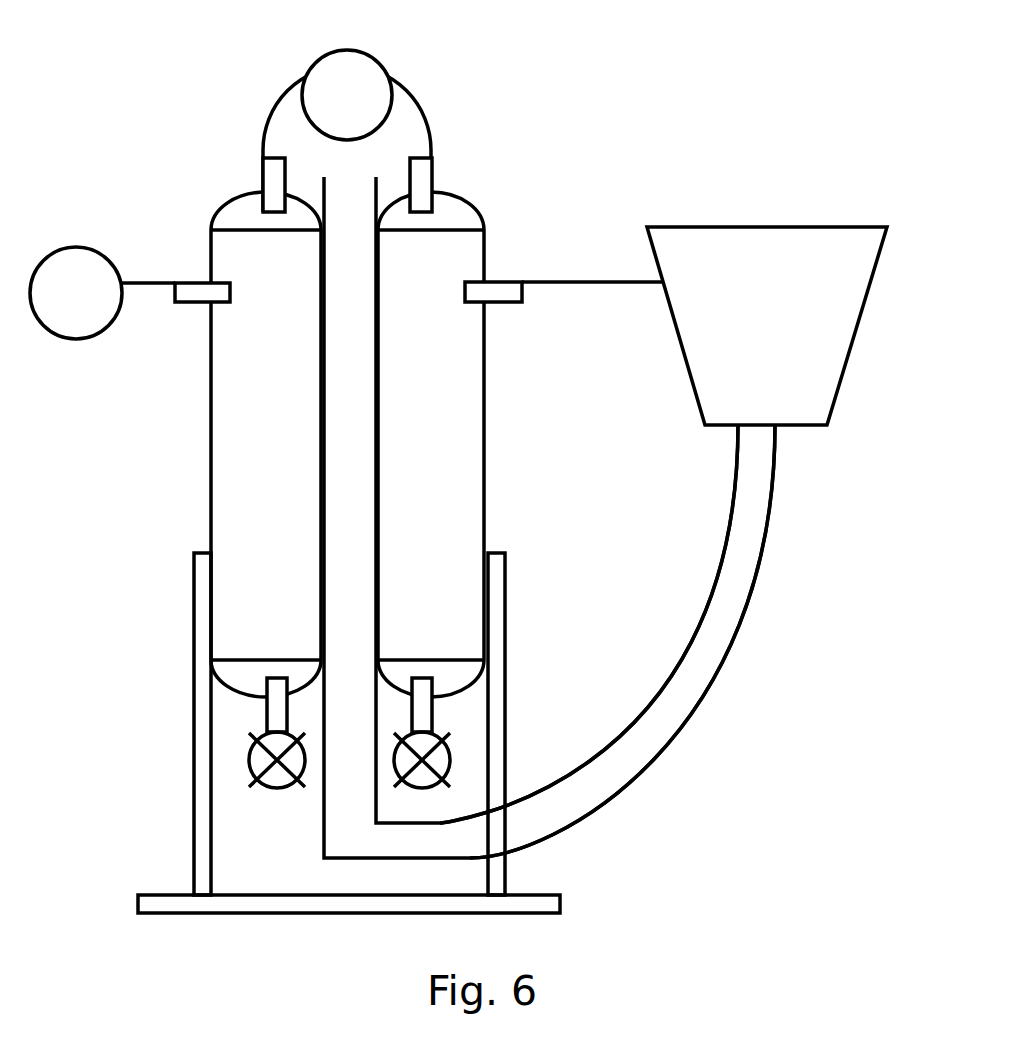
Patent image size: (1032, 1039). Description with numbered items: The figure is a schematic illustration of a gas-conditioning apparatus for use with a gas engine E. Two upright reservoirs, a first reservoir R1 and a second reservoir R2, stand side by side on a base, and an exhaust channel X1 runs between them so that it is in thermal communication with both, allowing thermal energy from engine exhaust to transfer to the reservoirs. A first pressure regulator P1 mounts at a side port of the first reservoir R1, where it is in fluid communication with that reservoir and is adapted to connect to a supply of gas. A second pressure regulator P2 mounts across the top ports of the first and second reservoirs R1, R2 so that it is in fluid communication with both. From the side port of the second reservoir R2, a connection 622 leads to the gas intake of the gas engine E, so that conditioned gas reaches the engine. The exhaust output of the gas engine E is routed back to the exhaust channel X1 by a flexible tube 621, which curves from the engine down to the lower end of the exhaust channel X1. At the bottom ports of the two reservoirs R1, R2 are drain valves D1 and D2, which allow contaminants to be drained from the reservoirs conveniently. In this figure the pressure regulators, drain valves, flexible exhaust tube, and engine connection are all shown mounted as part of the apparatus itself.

The first pressure regulator P1 is at (93, 305).
The second pressure regulator P2 is at (364, 107).
The first reservoir R1 is at (281, 395).
The second reservoir R2 is at (446, 395).
The exhaust channel X1 is at (366, 412).
The gas engine E is at (776, 320).
The curved conduit 621 is at (686, 641).
The connecting conduit 622 is at (631, 222).
The valve D1 is at (171, 752).
The valve D2 is at (574, 773).